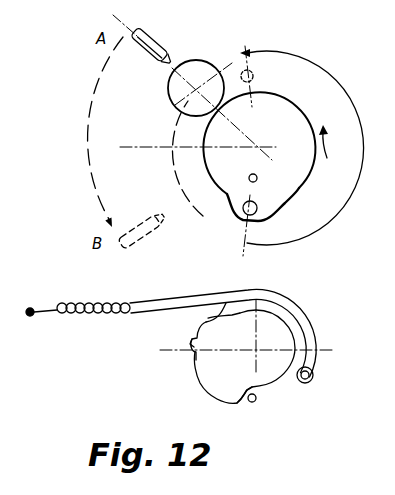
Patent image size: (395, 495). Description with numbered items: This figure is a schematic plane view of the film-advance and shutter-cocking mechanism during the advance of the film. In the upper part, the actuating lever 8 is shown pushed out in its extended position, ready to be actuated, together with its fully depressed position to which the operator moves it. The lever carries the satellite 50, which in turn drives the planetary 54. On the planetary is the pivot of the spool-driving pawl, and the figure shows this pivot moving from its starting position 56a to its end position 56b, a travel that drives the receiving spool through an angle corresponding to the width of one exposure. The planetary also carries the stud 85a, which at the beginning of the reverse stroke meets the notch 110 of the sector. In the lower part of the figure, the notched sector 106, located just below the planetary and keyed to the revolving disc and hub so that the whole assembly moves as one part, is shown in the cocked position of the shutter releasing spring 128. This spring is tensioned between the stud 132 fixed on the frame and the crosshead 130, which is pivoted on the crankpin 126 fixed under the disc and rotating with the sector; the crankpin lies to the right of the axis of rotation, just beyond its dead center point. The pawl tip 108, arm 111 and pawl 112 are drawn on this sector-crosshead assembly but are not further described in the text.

The lever 8 is at (160, 46).
The satellite 50 is at (208, 66).
The planetary 54 is at (291, 117).
The pivot of the pawl (initial position) 56a is at (257, 208).
The pivot of the pawl (end position) 56b is at (254, 78).
The stud of the planetary 85a is at (257, 178).
The notched sector 106 is at (283, 329).
The pawl tip 108 is at (196, 338).
The notch of the sector 110 is at (243, 399).
The arm 111 is at (226, 300).
The pawl 112 is at (204, 326).
The crankpin 126 is at (314, 376).
The shutter releasing spring 128 is at (98, 300).
The crosshead 130 is at (245, 292).
The stud 132 is at (33, 316).